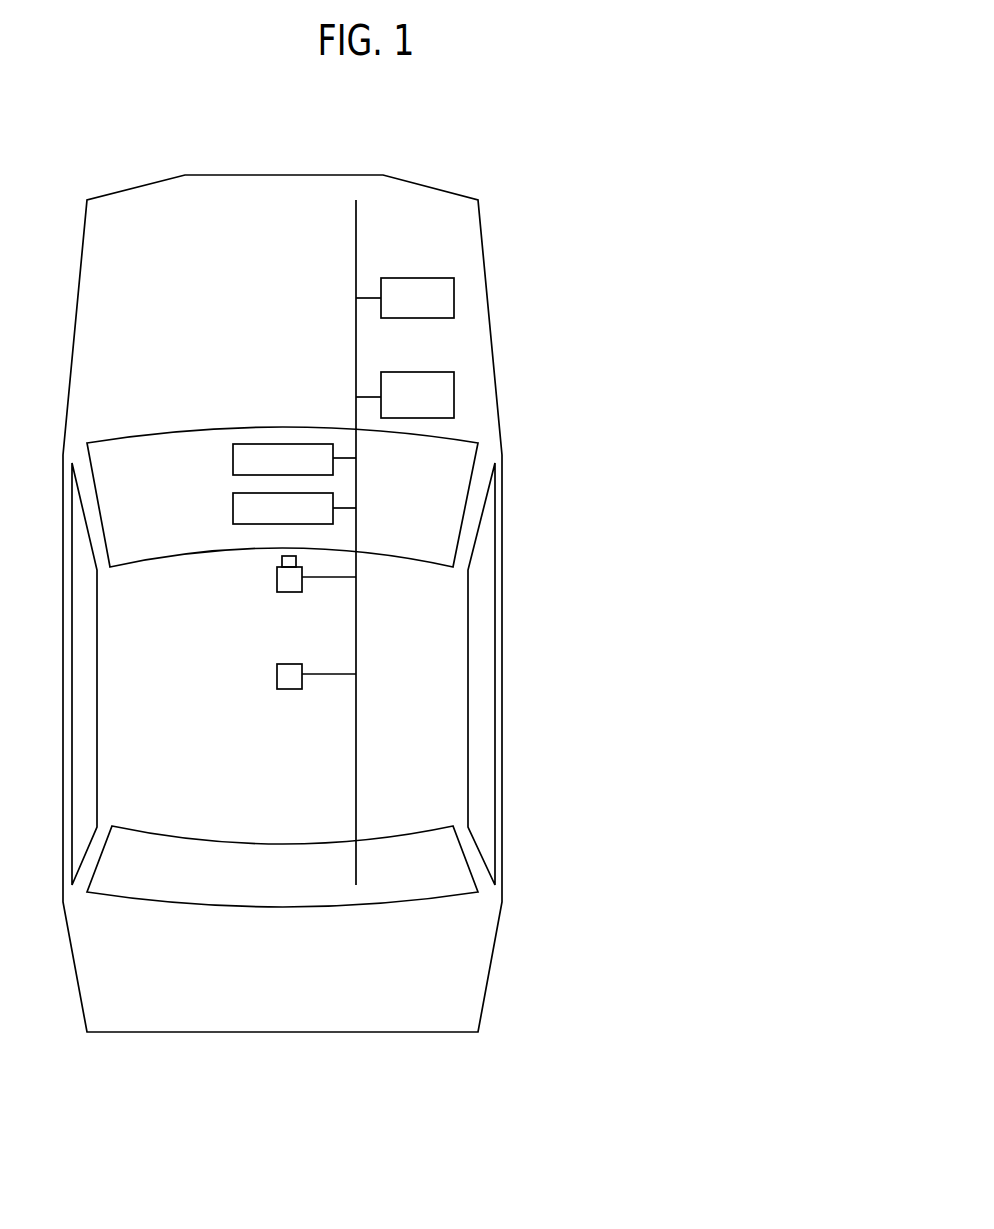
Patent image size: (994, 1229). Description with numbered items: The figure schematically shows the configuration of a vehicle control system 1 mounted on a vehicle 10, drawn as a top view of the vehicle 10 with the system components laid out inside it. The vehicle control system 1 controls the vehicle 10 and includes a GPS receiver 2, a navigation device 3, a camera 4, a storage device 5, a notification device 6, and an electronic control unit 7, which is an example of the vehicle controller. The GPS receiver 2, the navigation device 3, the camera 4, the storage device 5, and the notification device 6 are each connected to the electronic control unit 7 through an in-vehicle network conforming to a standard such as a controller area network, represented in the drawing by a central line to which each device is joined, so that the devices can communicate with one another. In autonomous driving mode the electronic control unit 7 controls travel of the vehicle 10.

The vehicle control system 1 is at (439, 603).
The GPS receiver 2 is at (277, 678).
The navigation device 3 is at (233, 459).
The camera 4 is at (277, 583).
The storage device 5 is at (454, 300).
The notification device 6 is at (233, 508).
The electronic control unit 7 is at (454, 398).
The vehicle 10 is at (503, 895).